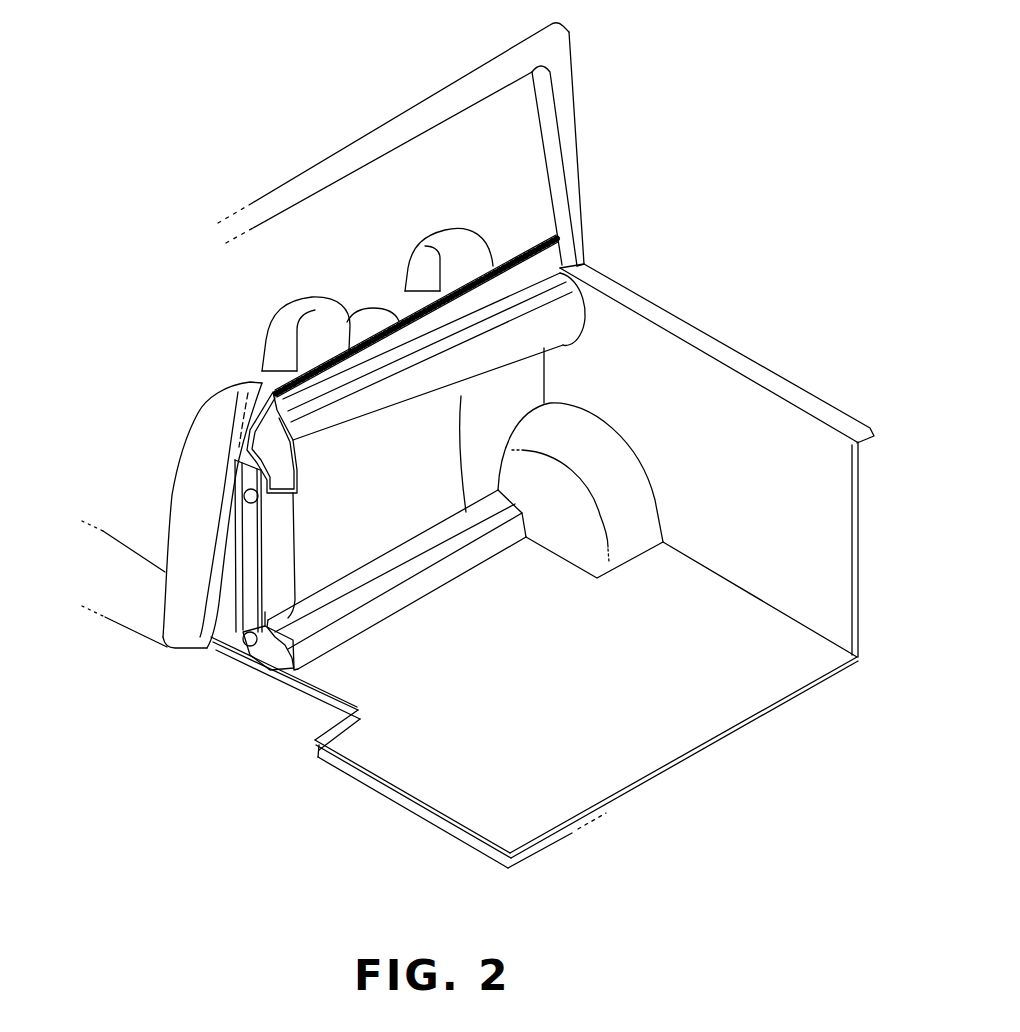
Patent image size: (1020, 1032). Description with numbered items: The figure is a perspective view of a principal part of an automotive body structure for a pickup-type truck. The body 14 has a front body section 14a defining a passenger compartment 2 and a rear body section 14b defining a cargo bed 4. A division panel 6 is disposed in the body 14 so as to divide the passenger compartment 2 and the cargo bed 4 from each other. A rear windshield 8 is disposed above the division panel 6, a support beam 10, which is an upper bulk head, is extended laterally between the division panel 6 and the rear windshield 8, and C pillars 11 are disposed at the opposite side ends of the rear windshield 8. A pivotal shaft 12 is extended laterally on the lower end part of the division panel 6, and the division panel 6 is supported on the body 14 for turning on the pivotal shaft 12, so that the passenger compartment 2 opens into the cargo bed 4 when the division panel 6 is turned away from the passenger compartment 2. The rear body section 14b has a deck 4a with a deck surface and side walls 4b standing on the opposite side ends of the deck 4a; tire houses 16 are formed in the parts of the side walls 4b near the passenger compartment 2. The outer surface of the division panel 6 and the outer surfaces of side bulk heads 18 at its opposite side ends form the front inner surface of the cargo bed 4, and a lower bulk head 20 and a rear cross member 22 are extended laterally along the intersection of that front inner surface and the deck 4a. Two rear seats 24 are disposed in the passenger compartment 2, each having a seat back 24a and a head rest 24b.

The passenger compartment 2 is at (370, 192).
The cargo bed 4 is at (612, 733).
The deck 4a is at (722, 702).
The side walls 4b is at (747, 397).
The division panel 6 is at (378, 546).
The rear windshield 8 is at (518, 190).
The support beam 10 is at (395, 403).
The C pillars 11 is at (567, 133).
The pivotal shaft 12 is at (241, 621).
The body 14 is at (690, 294).
The front body section 14a is at (515, 98).
The rear body section 14b is at (801, 447).
The tire houses 16 is at (553, 548).
The side bulk heads 18 is at (530, 381).
The lower bulk head 20 is at (377, 610).
The rear cross member 22 is at (268, 662).
The rear seats 24 is at (236, 344).
The seat back 24a is at (394, 303).
The head rest 24b is at (306, 322).